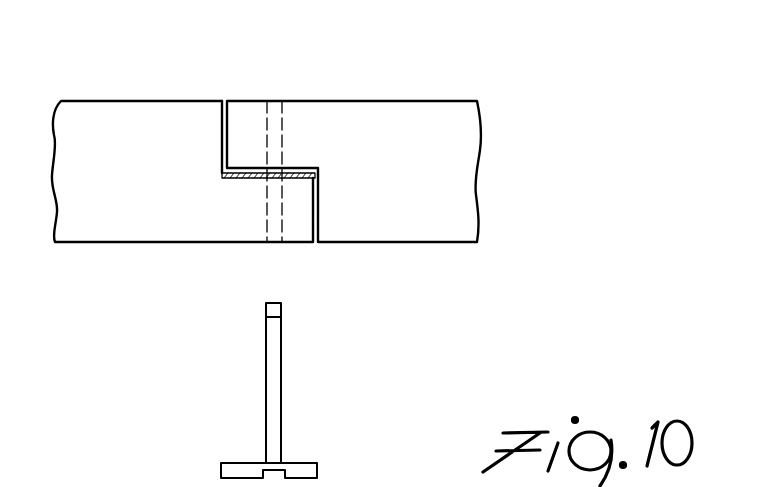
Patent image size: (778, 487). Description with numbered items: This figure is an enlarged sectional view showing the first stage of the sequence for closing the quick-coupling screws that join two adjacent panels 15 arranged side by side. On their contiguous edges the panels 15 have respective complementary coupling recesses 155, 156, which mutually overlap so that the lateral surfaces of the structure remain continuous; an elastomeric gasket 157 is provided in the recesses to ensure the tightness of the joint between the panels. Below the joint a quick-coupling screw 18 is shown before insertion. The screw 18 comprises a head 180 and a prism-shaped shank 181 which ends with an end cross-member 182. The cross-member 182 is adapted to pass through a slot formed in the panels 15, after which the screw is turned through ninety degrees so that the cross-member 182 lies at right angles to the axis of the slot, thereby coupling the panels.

The panel 15 is at (407, 91).
The coupling recess 155 is at (244, 120).
The coupling recess 156 is at (299, 240).
The elastomeric gasket 157 is at (241, 176).
The quick-coupling screw 18 is at (261, 395).
The head 180 is at (317, 471).
The prism-shaped shank 181 is at (268, 393).
The end cross-member 182 is at (271, 308).